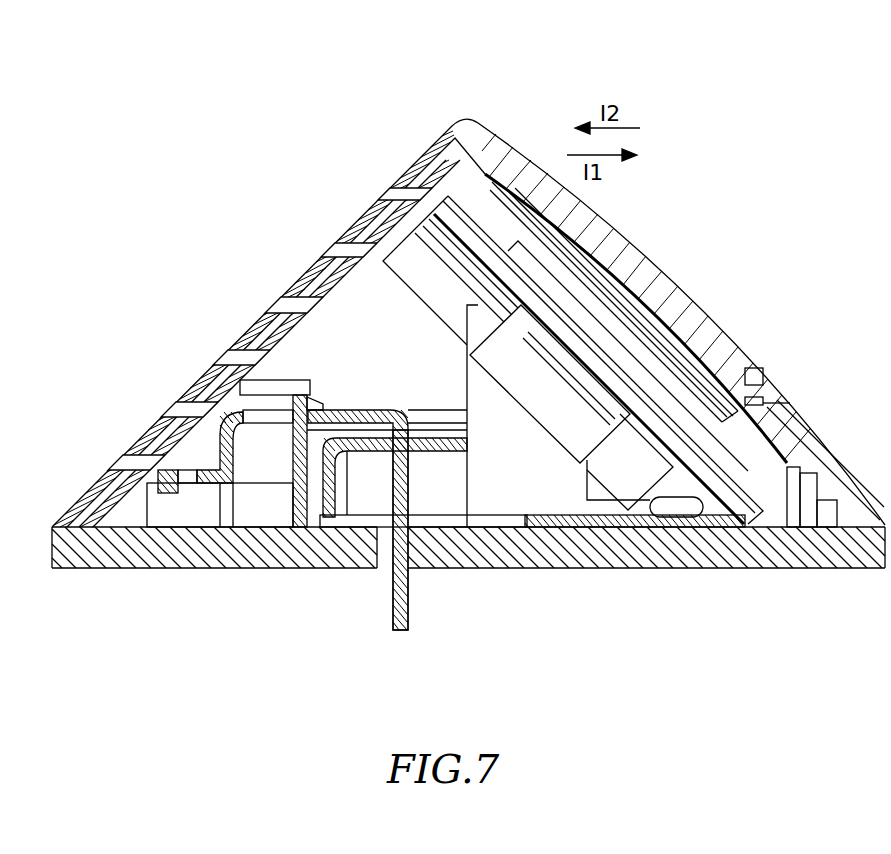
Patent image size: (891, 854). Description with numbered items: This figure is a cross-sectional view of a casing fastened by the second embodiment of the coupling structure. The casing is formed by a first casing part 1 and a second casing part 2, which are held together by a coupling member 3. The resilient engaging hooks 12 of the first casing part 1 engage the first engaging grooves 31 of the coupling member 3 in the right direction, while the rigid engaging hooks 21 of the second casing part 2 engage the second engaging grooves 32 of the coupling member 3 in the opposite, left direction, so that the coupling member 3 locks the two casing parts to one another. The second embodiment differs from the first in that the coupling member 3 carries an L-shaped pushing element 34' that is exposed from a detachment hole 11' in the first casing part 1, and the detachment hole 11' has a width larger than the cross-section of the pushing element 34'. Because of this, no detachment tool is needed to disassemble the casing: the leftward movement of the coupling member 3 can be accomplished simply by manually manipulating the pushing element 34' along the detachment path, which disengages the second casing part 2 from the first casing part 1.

The first casing part 1 is at (718, 553).
The second casing part 2 is at (700, 317).
The coupling member 3 is at (357, 404).
The detachment hole 11' is at (360, 588).
The resilient engaging hooks 12 is at (297, 393).
The rigid engaging hooks 21 is at (168, 490).
The first engaging grooves 31 is at (255, 418).
The second engaging grooves 32 is at (188, 478).
The L-shaped pushing element 34' is at (442, 524).